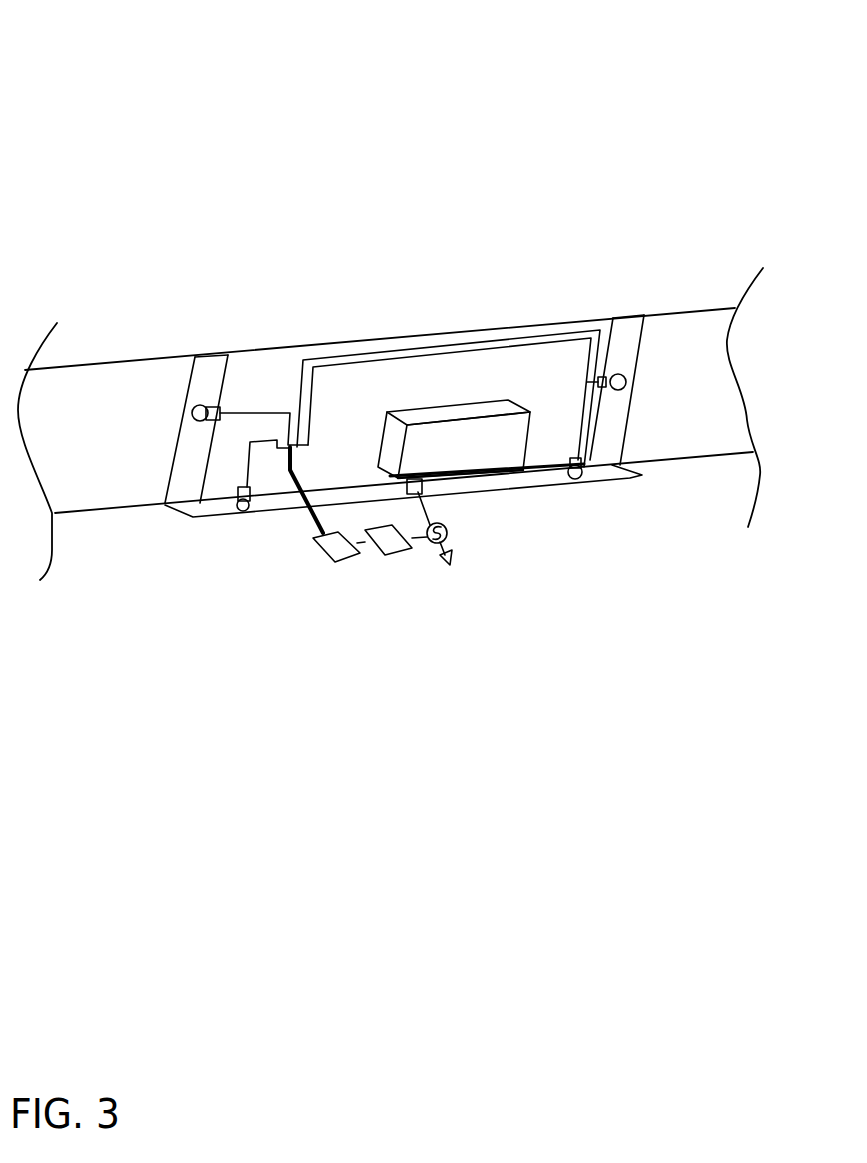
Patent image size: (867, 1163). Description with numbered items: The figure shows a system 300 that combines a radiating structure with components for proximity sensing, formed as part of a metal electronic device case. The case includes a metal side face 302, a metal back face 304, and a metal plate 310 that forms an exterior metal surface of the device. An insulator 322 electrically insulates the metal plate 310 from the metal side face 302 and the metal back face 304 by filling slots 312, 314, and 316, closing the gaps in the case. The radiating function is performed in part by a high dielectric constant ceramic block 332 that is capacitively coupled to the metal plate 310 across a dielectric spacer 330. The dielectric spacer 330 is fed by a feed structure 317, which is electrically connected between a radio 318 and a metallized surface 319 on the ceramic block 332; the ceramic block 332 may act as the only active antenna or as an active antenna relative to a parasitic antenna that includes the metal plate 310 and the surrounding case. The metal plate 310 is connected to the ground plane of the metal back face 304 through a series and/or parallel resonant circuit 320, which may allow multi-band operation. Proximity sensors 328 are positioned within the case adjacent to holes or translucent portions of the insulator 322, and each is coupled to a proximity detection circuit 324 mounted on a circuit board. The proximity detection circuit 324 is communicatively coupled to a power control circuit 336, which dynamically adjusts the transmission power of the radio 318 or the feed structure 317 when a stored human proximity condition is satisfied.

The system 300 is at (113, 92).
The metal side face 302 is at (148, 370).
The metal back face 304 is at (165, 593).
The metal plate 310 is at (420, 333).
The slot 312 is at (617, 315).
The slot 314 is at (213, 352).
The slot 316 is at (632, 480).
The feed structure 317 is at (385, 483).
The radio 318 is at (447, 533).
The metallized surface 319 is at (487, 457).
The resonant circuit 320 is at (297, 493).
The insulator 322 is at (185, 477).
The proximity detection circuit 324 is at (350, 557).
The proximity sensors 328 is at (245, 490).
The dielectric spacer 330 is at (413, 412).
The ceramic block 332 is at (483, 415).
The power control circuit 336 is at (400, 553).